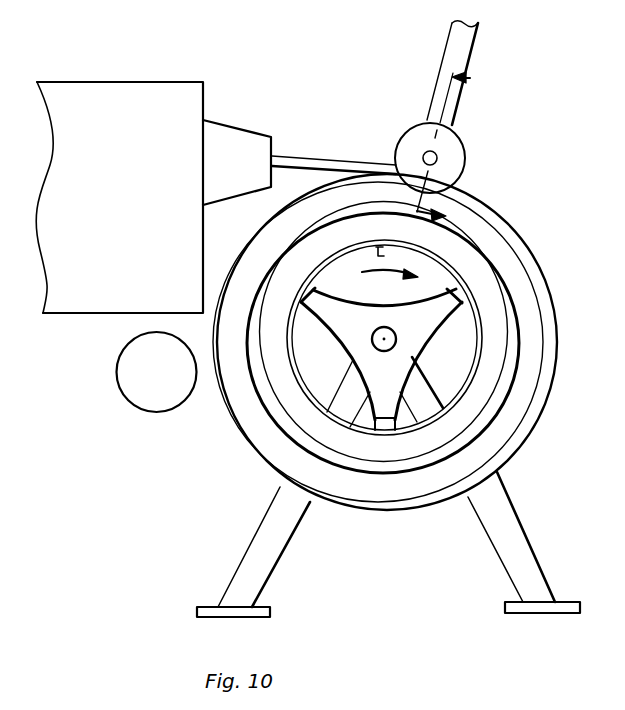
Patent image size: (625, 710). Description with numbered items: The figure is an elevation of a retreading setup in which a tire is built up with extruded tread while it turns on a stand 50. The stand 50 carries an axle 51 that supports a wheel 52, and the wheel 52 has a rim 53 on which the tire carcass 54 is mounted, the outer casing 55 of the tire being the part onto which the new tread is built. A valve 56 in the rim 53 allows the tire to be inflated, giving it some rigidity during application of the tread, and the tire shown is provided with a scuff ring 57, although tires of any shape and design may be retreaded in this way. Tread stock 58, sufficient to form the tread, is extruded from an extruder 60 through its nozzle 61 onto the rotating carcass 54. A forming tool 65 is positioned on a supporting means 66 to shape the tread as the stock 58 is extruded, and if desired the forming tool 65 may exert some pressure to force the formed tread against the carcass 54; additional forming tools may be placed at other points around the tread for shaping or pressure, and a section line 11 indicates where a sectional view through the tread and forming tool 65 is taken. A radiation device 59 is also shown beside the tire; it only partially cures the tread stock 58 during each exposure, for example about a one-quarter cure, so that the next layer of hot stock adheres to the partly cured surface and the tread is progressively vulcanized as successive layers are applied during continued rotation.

The section line 11 is at (470, 79).
The stand 50 is at (517, 548).
The axle 51 is at (385, 327).
The wheel 52 is at (415, 335).
The rim 53 is at (295, 366).
The tire carcass 54 is at (513, 262).
The outer drum shell 55 is at (548, 285).
The valve 56 is at (378, 253).
The scuff ring 57 is at (502, 400).
The stock 58 is at (358, 140).
The radiation device 59 is at (118, 384).
The extruder 60 is at (157, 93).
The nozzle 61 is at (238, 138).
The forming tool 65 is at (406, 132).
The supporting means 66 is at (462, 60).